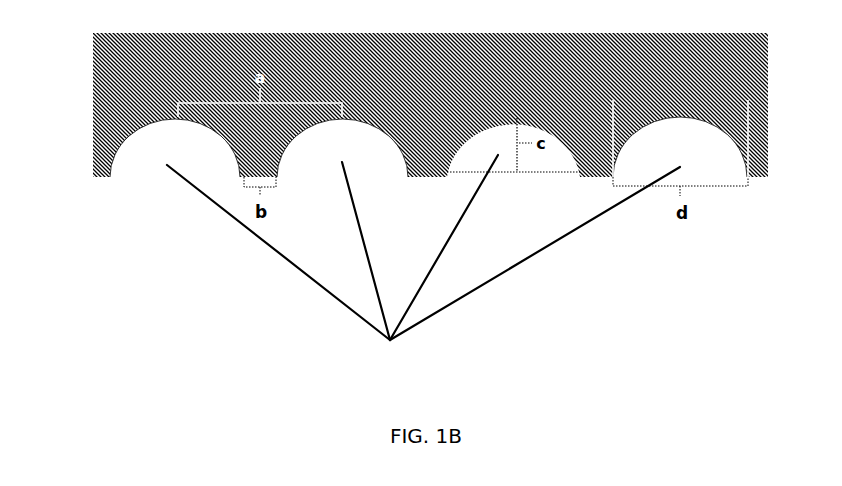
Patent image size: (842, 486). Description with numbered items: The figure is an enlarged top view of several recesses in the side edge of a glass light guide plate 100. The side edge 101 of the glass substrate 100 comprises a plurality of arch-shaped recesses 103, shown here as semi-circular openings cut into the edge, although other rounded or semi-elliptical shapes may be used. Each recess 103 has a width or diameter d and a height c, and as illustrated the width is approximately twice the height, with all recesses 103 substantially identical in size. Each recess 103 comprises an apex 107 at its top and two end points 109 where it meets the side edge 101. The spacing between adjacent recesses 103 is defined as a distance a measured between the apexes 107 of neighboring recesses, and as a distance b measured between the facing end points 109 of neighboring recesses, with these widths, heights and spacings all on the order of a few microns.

The glass light guide plate 100 is at (452, 72).
The side edge 101 is at (97, 192).
The arch-shaped recess 103 is at (423, 261).
The apex 107 is at (177, 117).
The end point 109 is at (681, 123).